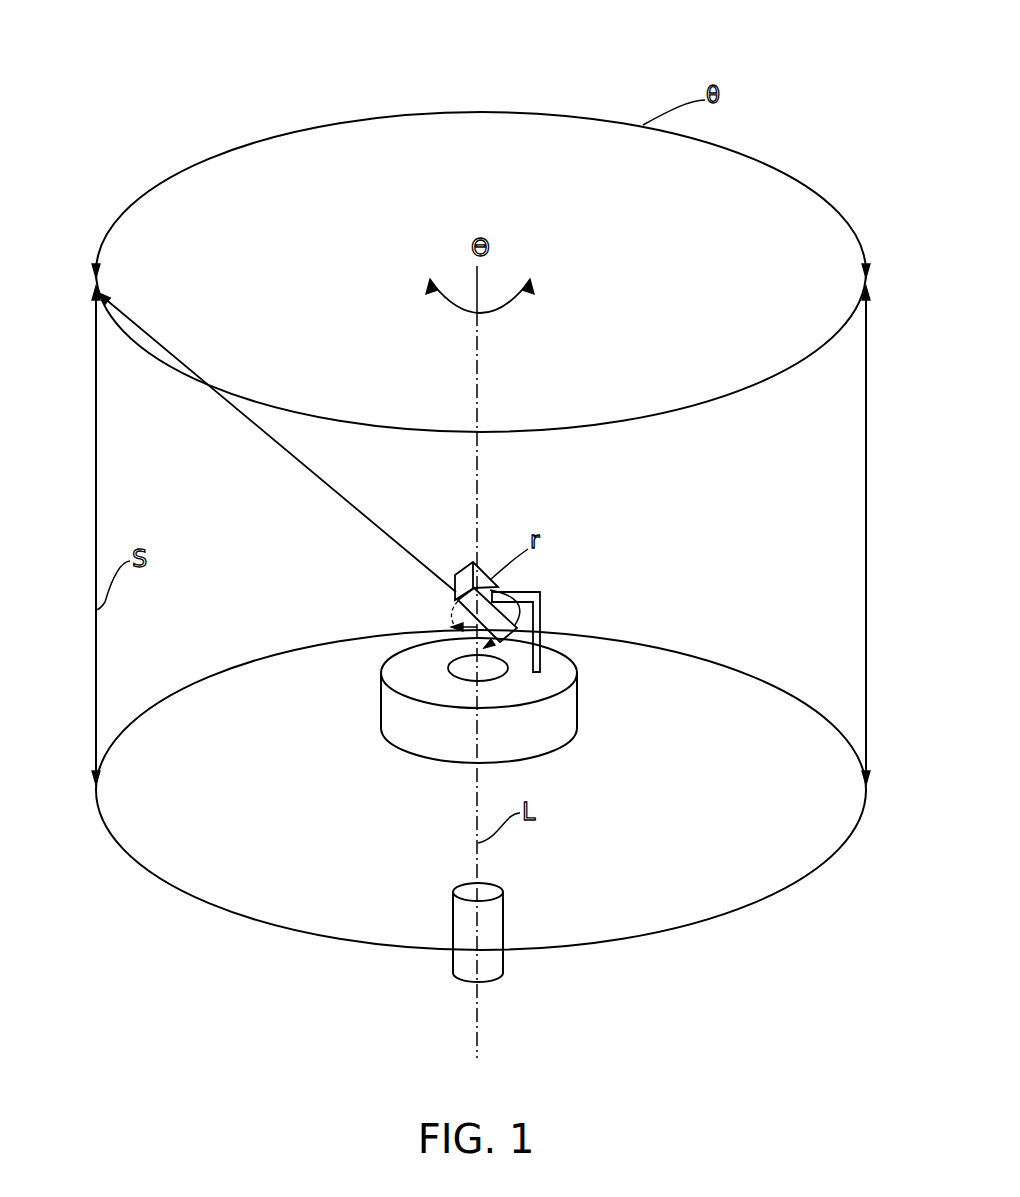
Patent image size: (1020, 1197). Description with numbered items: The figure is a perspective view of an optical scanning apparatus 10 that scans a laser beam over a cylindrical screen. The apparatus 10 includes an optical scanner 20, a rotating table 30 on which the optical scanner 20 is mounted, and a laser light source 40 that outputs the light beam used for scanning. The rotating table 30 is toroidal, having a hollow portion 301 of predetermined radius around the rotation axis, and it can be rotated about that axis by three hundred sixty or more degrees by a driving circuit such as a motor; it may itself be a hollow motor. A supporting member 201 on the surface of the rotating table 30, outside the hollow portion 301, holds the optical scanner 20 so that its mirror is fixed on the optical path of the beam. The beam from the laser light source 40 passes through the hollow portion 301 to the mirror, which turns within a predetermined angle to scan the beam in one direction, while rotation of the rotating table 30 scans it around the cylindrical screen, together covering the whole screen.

The optical scanning apparatus 10 is at (636, 806).
The optical scanner 20 is at (462, 578).
The supporting member 201 is at (535, 617).
The rotating table 30 is at (567, 714).
The hollow portion 301 is at (467, 666).
The laser light source 40 is at (460, 926).